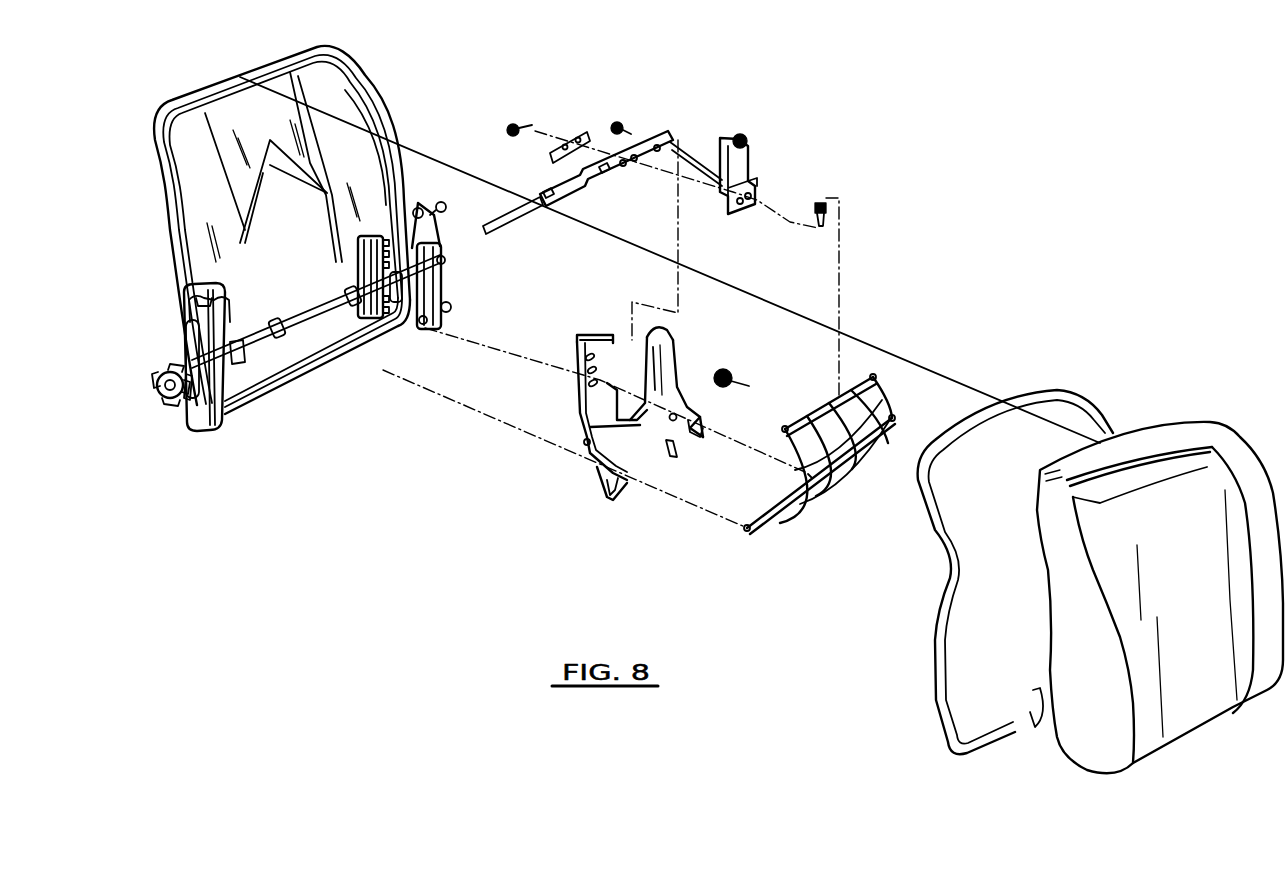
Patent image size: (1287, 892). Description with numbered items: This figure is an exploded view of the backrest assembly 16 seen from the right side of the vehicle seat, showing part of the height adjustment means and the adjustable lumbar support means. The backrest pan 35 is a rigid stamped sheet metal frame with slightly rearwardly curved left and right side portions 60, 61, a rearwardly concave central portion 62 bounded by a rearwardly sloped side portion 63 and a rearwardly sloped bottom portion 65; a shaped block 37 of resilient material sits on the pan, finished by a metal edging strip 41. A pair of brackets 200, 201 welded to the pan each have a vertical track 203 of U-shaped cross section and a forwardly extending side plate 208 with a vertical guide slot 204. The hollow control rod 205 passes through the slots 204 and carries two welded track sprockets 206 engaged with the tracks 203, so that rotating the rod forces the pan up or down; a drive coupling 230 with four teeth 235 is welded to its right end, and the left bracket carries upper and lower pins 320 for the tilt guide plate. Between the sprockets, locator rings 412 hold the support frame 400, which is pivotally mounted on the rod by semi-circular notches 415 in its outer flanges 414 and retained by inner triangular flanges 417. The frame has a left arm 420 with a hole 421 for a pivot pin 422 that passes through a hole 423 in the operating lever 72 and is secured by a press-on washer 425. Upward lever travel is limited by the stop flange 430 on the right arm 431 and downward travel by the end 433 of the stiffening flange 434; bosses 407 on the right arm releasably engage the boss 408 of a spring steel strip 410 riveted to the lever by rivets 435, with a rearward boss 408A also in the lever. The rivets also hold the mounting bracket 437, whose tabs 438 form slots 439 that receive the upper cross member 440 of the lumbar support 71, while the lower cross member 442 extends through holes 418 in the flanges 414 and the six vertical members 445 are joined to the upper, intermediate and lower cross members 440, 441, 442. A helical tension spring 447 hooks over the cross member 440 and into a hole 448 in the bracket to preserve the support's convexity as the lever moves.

The backrest assembly 16 is at (185, 76).
The backrest pan 35 is at (154, 141).
The block of resilient compressible material 37 is at (1200, 450).
The edging strip 41 is at (1076, 390).
The left side portion 60 is at (355, 152).
The right side portion 61 is at (203, 214).
The central portion 62 is at (280, 257).
The left sloped side portion 63 is at (316, 126).
The bottom portion 65 is at (308, 353).
The lumbar support 71 is at (897, 395).
The operating lever 72 is at (510, 223).
The bracket 200 is at (422, 324).
The bracket 201 is at (200, 413).
The vertical track 203 is at (193, 303).
The vertical guide slot 204 is at (181, 327).
The control rod 205 is at (307, 318).
The track sprocket 206 is at (233, 352).
The side plate 208 is at (190, 305).
The drive coupling 230 is at (177, 360).
The teeth 235 is at (162, 404).
The pin 320 is at (446, 207).
The support frame 400 is at (574, 404).
The boss 407 is at (586, 383).
The boss 408 is at (556, 160).
The boss 408A is at (604, 190).
The spring steel strip 410 is at (584, 133).
The locator ring 412 is at (352, 293).
The outer flange 414 is at (692, 407).
The semi-circular notch 415 is at (697, 441).
The inner triangular flange 417 is at (673, 457).
The hole 418 is at (670, 420).
The left arm 420 is at (677, 358).
The hole 421 is at (672, 340).
The pivot pin 422 is at (617, 122).
The hole 423 is at (668, 138).
The press-on washer 425 is at (733, 372).
The stop flange 430 is at (594, 333).
The right arm 431 is at (575, 338).
The end of stiffening flange 433 is at (607, 383).
The stiffening flange 434 is at (622, 427).
The rivet 435 is at (513, 124).
The mounting bracket 437 is at (757, 184).
The tab 438 is at (750, 143).
The slot 439 is at (727, 142).
The upper cross member 440 is at (874, 377).
The intermediate cross member 441 is at (894, 418).
The lower cross member 442 is at (747, 531).
The vertical member 445 is at (794, 526).
The helical tension spring 447 is at (828, 214).
The hole 448 is at (750, 178).